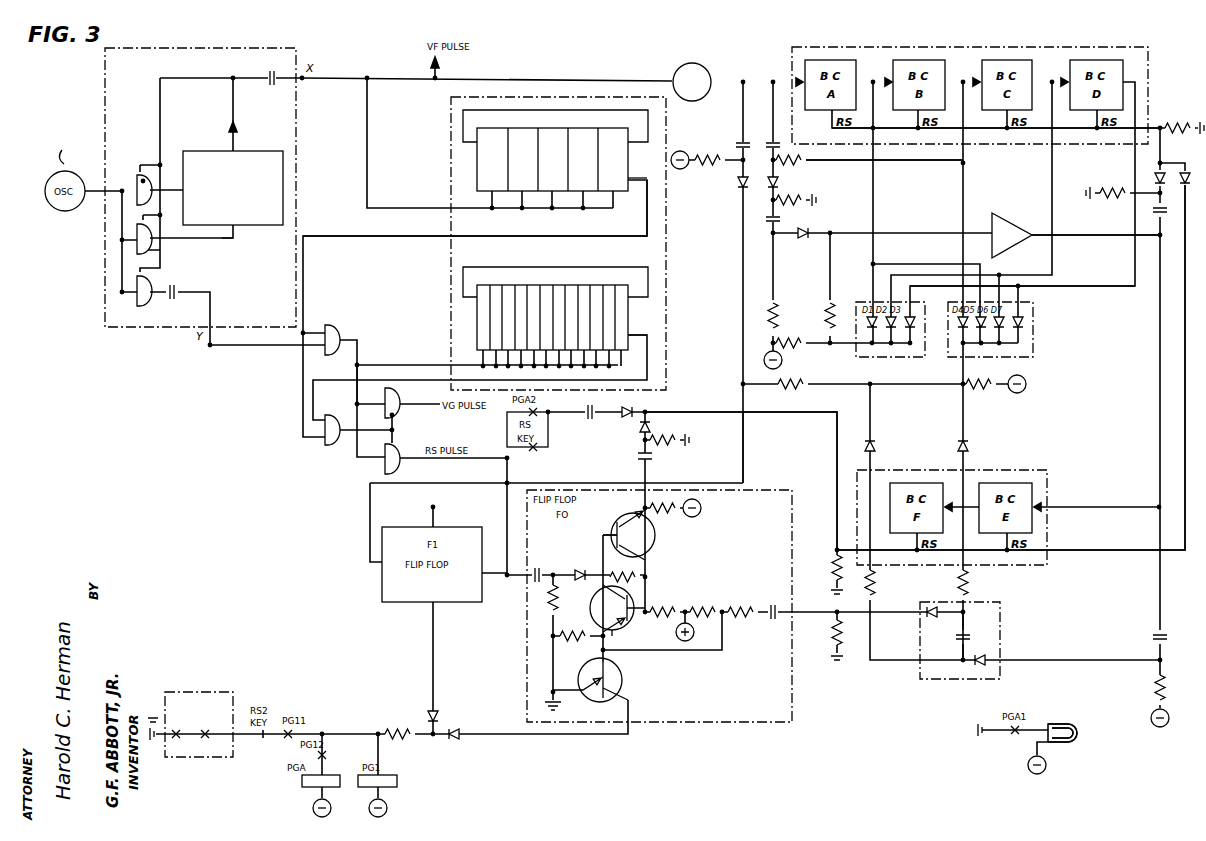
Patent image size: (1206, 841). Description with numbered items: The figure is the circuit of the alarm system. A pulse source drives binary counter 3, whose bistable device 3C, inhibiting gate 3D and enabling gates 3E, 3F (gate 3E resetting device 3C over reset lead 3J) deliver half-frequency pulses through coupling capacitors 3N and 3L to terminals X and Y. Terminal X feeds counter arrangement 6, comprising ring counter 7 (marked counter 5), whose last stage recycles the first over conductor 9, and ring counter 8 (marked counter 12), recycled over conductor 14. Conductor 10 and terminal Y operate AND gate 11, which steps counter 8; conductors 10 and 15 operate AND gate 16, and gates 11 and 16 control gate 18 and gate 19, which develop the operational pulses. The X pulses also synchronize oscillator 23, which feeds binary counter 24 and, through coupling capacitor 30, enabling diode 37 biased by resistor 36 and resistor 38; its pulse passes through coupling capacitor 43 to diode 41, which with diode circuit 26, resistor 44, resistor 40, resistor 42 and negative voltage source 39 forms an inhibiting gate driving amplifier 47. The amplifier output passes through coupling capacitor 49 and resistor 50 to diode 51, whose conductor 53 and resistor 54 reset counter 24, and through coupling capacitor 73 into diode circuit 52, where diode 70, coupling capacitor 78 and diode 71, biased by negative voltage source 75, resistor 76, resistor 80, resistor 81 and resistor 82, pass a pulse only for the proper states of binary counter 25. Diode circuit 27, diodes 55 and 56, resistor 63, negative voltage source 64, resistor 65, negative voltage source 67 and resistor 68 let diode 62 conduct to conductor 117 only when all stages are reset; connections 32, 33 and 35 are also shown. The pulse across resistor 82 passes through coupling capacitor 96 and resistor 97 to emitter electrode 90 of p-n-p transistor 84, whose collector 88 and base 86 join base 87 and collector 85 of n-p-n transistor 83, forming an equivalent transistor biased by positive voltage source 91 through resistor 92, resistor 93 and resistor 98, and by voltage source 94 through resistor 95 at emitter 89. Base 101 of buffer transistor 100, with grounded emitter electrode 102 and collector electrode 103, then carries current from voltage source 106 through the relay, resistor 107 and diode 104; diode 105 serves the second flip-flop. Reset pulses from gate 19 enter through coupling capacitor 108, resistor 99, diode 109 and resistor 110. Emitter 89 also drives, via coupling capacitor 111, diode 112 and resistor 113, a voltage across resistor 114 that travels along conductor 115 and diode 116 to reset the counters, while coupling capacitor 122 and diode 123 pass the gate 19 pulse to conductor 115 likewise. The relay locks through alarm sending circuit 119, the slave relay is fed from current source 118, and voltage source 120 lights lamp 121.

The binary counter 3 is at (296, 50).
The bistable device 3C is at (225, 193).
The inhibiting gate 3D is at (137, 178).
The enabling gate 3E is at (150, 258).
The enabling gate 3F is at (142, 308).
The reset lead 3J is at (223, 238).
The coupling capacitor 3L is at (174, 300).
The coupling capacitor 3N is at (286, 62).
The counter 5 is at (552, 159).
The counter arrangement 6 is at (668, 312).
The ring counter 7 is at (630, 180).
The ring counter 8 is at (630, 335).
The conductor 9 is at (571, 108).
The conductor 10 is at (536, 236).
The AND gate 11 is at (337, 322).
The counter 12 is at (552, 317).
The conductor 14 is at (568, 267).
The conductor 15 is at (420, 378).
The AND gate 16 is at (348, 402).
The gate 18 is at (400, 398).
The gate 19 is at (398, 472).
The oscillator 23 is at (708, 98).
The binary counter 24 is at (1150, 62).
The binary counter 25 is at (1048, 478).
The diode circuit 26 is at (858, 300).
The diode circuit 27 is at (1034, 348).
The coupling capacitor 30 is at (766, 142).
The lead 32 is at (1120, 233).
The lead 33 is at (1026, 292).
The lead 35 is at (936, 158).
The resistor 36 is at (805, 156).
The diode 37 is at (780, 182).
The resistor 38 is at (805, 196).
The negative voltage source 39 is at (782, 364).
The resistor 40 is at (793, 338).
The diode 41 is at (814, 218).
The resistor 42 is at (778, 312).
The coupling capacitor 43 is at (780, 222).
The resistor 44 is at (822, 310).
The amplifier 47 is at (1012, 226).
The coupling capacitor 49 is at (1165, 212).
The resistor 50 is at (1122, 178).
The diode 51 is at (1156, 180).
The diode circuit 52 is at (1002, 618).
The conductor 53 is at (987, 126).
The resistor 54 is at (1188, 122).
The diode 55 is at (970, 448).
The diode 56 is at (878, 448).
The diode 62 is at (738, 186).
The resistor 63 is at (796, 390).
The negative voltage source 64 is at (1026, 388).
The resistor 65 is at (982, 390).
The negative voltage source 67 is at (686, 170).
The resistor 68 is at (722, 156).
The diode 70 is at (992, 645).
The diode 71 is at (940, 590).
The coupling capacitor 73 is at (1170, 640).
The negative voltage source 75 is at (1170, 720).
The resistor 76 is at (1166, 696).
The coupling capacitor 78 is at (970, 637).
The resistor 80 is at (876, 588).
The resistor 81 is at (970, 584).
The resistor 82 is at (830, 632).
The n-p-n junction transistor 83 is at (655, 540).
The p-n-p junction transistor 84 is at (600, 624).
The collector 85 is at (650, 562).
The base 86 is at (634, 620).
The base 87 is at (612, 530).
The collector 88 is at (600, 598).
The emitter 89 is at (632, 508).
The emitter electrode 90 is at (616, 634).
The positive voltage source 91 is at (675, 634).
The resistor 92 is at (674, 596).
The resistor 93 is at (712, 596).
The voltage source 94 is at (702, 507).
The resistor 95 is at (665, 514).
The coupling capacitor 96 is at (782, 596).
The resistor 97 is at (750, 596).
The resistor 98 is at (580, 642).
The resistor 99 is at (546, 602).
The transistor 100 is at (622, 682).
The base 101 is at (606, 664).
The emitter electrode 102 is at (585, 683).
The collector electrode 103 is at (605, 705).
The diode 104 is at (452, 740).
The diode 105 is at (440, 712).
The voltage source 106 is at (388, 812).
The resistor 107 is at (409, 730).
The coupling capacitor 108 is at (543, 568).
The diode 109 is at (580, 565).
The resistor 110 is at (618, 572).
The coupling capacitor 111 is at (636, 458).
The diode 112 is at (652, 428).
The resistor 113 is at (672, 446).
The resistor 114 is at (830, 568).
The conductor 115 is at (808, 414).
The diode 116 is at (1190, 182).
The conductor 117 is at (745, 463).
The current source 118 is at (332, 812).
The alarm sending circuit 119 is at (212, 692).
The voltage source 120 is at (1046, 769).
The lamp 121 is at (1067, 726).
The coupling capacitor 122 is at (593, 405).
The diode 123 is at (640, 404).